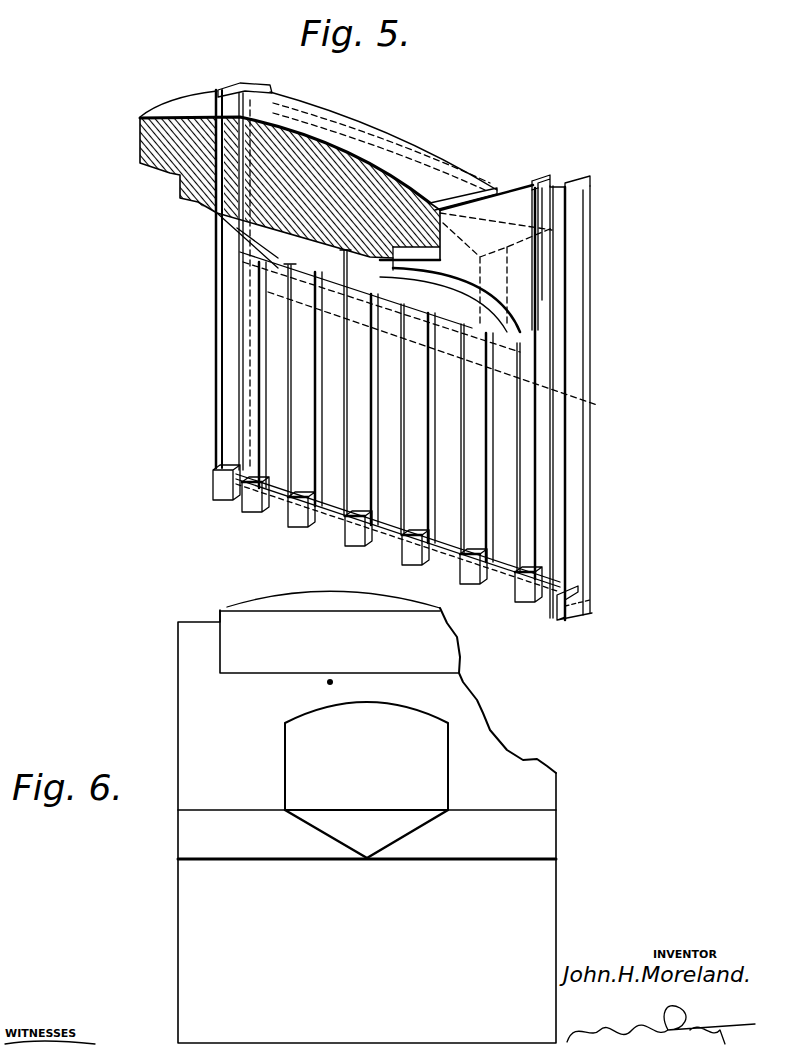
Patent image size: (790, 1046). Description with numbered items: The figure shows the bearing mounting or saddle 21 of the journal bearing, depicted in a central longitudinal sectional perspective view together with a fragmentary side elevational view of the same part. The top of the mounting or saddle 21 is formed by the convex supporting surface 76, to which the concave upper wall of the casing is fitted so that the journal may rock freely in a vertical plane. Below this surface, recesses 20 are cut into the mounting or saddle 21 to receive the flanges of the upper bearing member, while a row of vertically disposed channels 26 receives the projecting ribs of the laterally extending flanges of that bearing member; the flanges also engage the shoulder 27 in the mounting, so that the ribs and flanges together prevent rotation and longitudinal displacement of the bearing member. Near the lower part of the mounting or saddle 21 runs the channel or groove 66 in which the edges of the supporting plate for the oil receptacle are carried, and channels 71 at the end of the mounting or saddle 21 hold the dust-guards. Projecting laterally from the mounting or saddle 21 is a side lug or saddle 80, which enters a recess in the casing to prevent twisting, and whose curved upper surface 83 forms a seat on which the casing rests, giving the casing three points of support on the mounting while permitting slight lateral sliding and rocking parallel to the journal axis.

In FIG. 5, the convex supporting surface 76 is at (368, 130).
In FIG. 6, the convex supporting surface 76 is at (318, 593).
In FIG. 5, the recesses 20 is at (443, 273).
In FIG. 5, the side lugs or saddles 80 is at (507, 272).
In FIG. 6, the side lugs or saddles 80 is at (366, 780).
In FIG. 5, the mounting or saddle 21 is at (590, 262).
In FIG. 5, the shoulder 27 is at (443, 330).
In FIG. 5, the vertically disposed channels 26 is at (277, 420).
In FIG. 5, the channels 71 is at (240, 435).
In FIG. 5, the channel or groove 66 is at (512, 563).
In FIG. 6, the curved upper surface 83 is at (313, 713).